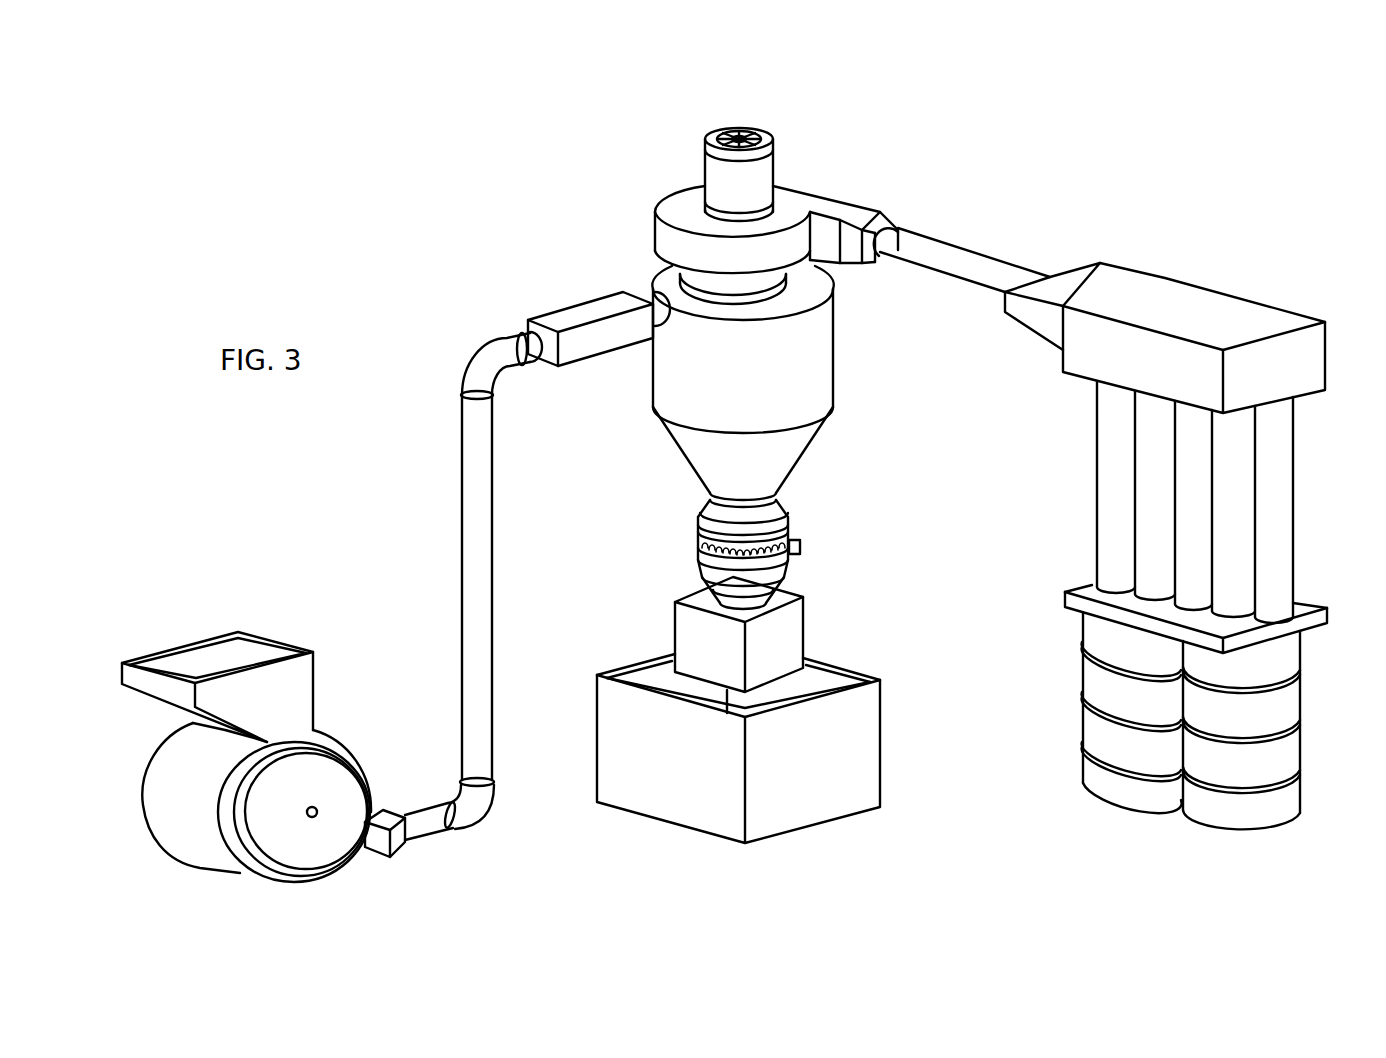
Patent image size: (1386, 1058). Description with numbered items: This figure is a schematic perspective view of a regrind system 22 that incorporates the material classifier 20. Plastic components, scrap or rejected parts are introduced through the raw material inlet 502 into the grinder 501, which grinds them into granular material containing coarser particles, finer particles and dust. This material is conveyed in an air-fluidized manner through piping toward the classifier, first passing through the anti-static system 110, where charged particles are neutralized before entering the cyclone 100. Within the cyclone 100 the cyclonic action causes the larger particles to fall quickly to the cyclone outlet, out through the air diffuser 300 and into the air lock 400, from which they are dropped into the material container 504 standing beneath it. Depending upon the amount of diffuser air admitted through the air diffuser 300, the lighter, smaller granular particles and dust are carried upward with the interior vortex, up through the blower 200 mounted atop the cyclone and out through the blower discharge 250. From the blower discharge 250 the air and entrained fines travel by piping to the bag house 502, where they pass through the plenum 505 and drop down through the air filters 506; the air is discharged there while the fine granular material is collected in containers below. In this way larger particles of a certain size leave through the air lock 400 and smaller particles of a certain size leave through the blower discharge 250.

The material classifier 20 is at (584, 157).
The regrind system 22 is at (362, 236).
The cyclone 100 is at (935, 436).
The anti-static system 110 is at (592, 346).
The blower 200 is at (866, 180).
The blower discharge 250 is at (905, 228).
The air diffuser 300 is at (830, 523).
The air lock 400 is at (945, 614).
The grinder 501 is at (385, 890).
The raw material inlet / bag house 502 is at (250, 654).
The material container 504 is at (788, 813).
The plenum 505 is at (1265, 316).
The air filters 506 is at (1115, 487).